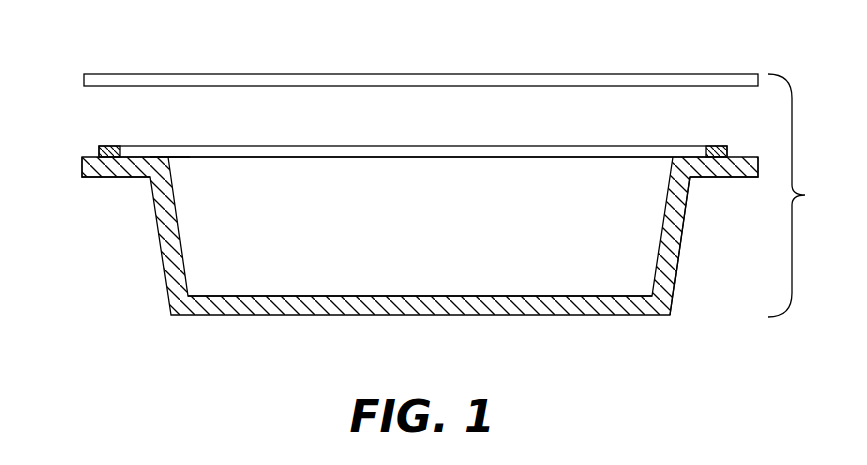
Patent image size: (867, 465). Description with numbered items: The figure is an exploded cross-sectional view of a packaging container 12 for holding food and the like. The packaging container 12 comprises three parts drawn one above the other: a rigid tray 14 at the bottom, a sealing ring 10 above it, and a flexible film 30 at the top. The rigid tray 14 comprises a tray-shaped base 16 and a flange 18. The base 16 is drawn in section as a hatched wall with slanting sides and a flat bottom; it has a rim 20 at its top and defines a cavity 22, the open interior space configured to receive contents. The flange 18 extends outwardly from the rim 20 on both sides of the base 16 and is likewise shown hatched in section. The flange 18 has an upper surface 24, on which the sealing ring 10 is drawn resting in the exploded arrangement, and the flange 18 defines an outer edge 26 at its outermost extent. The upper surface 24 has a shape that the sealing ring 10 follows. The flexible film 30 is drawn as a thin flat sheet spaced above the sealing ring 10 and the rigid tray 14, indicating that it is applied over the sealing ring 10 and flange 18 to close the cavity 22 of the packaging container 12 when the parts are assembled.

The sealing ring 10 is at (638, 146).
The packaging container 12 is at (805, 195).
The rigid tray 14 is at (160, 245).
The base 16 is at (679, 257).
The flange 18 is at (723, 178).
The rim 20 is at (170, 157).
The cavity 22 is at (420, 253).
The upper surface 24 is at (90, 155).
The outer edge 26 is at (82, 167).
The flexible film 30 is at (638, 73).